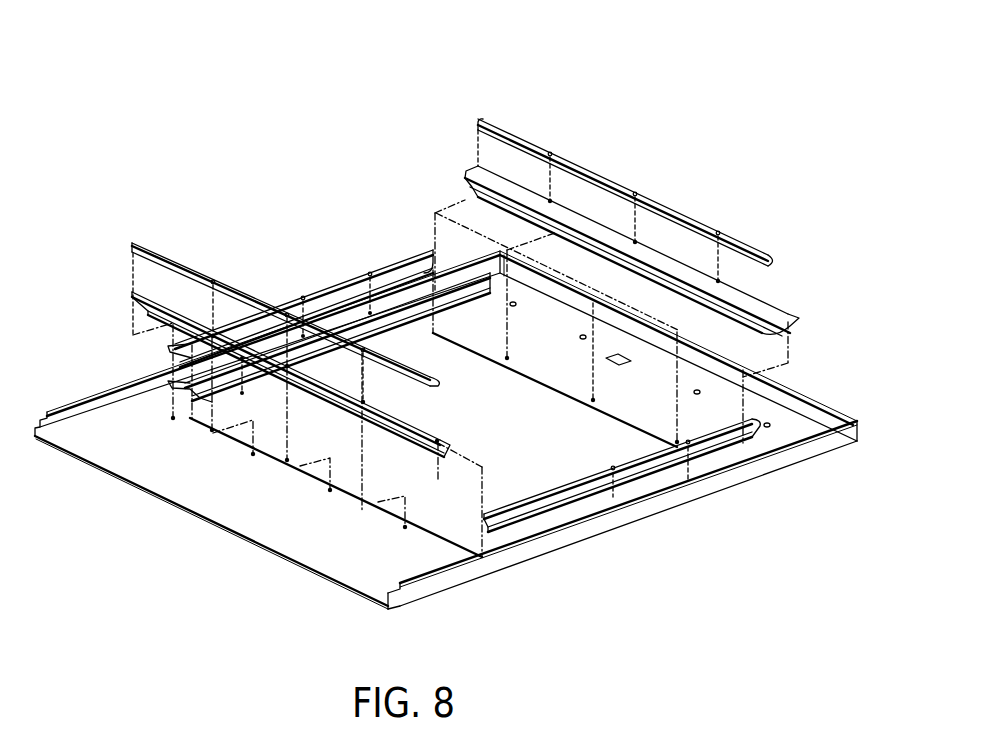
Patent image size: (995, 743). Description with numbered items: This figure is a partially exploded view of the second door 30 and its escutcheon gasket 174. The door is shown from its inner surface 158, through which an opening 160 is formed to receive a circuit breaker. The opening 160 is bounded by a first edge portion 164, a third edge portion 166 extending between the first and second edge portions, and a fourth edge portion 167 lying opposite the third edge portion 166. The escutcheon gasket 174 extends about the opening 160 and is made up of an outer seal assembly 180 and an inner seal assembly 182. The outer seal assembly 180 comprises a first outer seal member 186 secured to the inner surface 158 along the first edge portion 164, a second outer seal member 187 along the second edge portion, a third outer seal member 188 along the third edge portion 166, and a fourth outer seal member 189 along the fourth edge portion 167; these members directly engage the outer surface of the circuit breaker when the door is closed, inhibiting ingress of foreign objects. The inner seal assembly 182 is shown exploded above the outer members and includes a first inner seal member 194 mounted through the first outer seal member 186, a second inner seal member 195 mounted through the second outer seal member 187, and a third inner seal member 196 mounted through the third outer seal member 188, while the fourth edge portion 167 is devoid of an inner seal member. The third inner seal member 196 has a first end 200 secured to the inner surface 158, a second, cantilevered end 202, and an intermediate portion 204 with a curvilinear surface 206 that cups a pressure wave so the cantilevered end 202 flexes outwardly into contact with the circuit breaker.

The second door 30 is at (446, 446).
The inner surface 158 is at (164, 468).
The opening 160 is at (489, 387).
The first edge portion 164 is at (263, 400).
The third edge portion 166 is at (611, 430).
The fourth edge portion 167 is at (353, 484).
The escutcheon gasket 174 is at (613, 218).
The outer seal assembly 180 is at (654, 266).
The inner seal assembly 182 is at (613, 218).
The first outer seal member 186 is at (329, 356).
The second outer seal member 187 is at (639, 476).
The third outer seal member 188 is at (580, 237).
The fourth outer seal member 189 is at (325, 391).
The first inner seal member 194 is at (341, 277).
The second inner seal member 195 is at (598, 163).
The third inner seal member 196 is at (255, 314).
The first end 200 is at (249, 313).
The second, cantilevered end 202 is at (268, 294).
The intermediate portion 204 is at (181, 253).
The curvilinear surface 206 is at (174, 299).